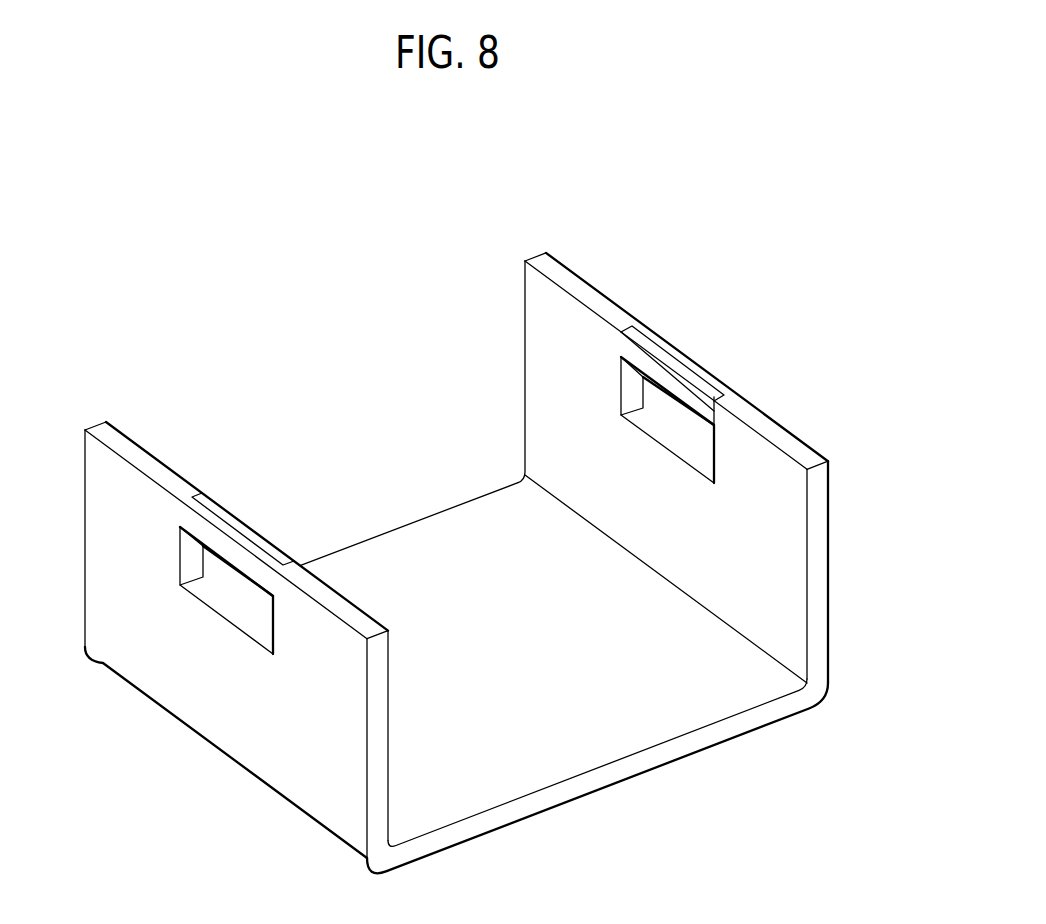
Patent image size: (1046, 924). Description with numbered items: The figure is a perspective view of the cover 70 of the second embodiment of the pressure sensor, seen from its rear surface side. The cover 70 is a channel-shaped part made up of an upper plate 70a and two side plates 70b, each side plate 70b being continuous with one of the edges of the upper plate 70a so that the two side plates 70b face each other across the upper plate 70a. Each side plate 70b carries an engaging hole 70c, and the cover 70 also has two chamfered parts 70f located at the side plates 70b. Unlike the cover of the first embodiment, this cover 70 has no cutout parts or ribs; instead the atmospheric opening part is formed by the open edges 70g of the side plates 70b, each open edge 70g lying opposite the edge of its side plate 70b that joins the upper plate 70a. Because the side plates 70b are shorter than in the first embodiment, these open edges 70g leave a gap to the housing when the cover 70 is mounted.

The cover 70 is at (666, 179).
The upper plate 70a is at (600, 777).
The side plate 70b is at (788, 500).
The engaging hole 70c is at (695, 457).
The chamfered part 70f is at (658, 357).
The open edge 70g is at (558, 253).